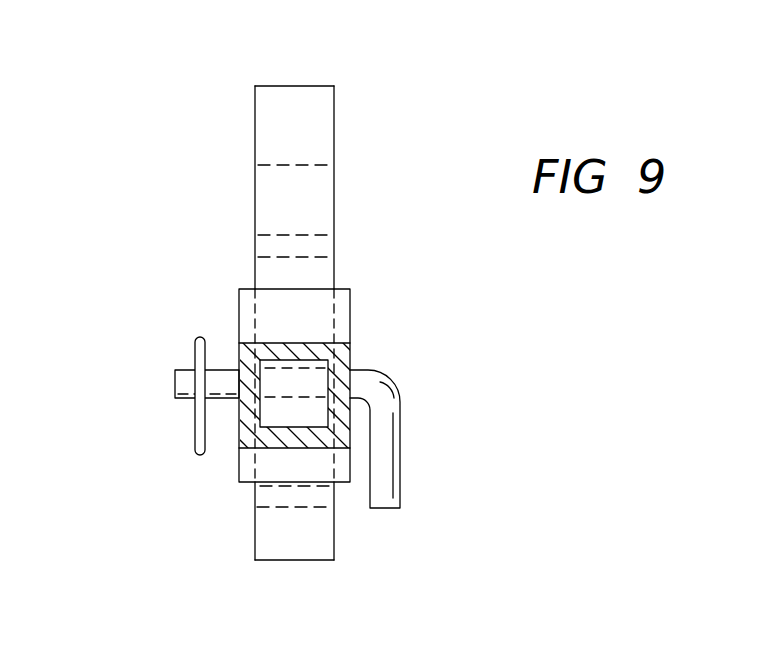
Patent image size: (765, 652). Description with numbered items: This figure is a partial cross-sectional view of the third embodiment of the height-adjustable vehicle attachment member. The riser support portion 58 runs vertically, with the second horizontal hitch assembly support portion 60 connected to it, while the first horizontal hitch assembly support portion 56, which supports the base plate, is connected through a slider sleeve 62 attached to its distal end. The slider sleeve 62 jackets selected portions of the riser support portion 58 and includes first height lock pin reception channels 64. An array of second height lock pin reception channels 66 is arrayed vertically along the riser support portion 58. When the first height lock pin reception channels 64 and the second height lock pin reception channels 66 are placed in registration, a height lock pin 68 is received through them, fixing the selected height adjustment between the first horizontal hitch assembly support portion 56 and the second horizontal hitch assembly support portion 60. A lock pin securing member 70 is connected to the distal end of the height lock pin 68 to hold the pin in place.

The first horizontal hitch assembly support portion 56 is at (340, 355).
The riser support portion 58 is at (318, 187).
The second horizontal hitch assembly support portion 60 is at (317, 118).
The slider sleeve 62 is at (350, 303).
The first height lock pin reception channels 64 is at (240, 418).
The second height lock pin reception channels 66 is at (282, 235).
The height lock pin 68 is at (373, 383).
The lock pin securing member 70 is at (197, 350).